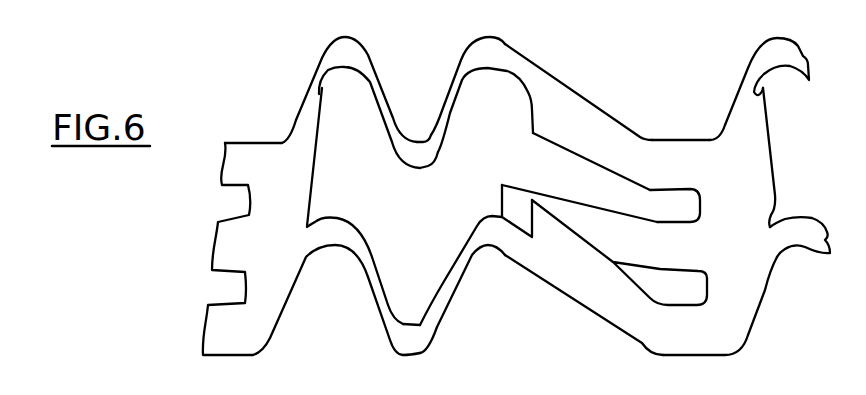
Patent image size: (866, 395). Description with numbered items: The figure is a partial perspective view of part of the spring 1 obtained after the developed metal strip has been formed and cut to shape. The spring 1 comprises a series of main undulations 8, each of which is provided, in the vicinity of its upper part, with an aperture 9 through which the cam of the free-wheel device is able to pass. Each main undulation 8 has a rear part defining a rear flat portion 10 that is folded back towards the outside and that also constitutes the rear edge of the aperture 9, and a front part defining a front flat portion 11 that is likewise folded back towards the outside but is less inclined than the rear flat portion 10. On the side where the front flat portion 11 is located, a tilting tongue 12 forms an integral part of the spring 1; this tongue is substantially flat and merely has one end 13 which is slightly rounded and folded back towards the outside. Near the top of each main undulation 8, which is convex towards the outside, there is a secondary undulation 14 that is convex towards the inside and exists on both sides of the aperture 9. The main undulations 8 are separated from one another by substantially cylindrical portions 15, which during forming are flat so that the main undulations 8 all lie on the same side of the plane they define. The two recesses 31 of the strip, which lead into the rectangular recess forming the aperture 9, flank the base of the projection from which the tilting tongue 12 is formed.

The spring 1 is at (553, 295).
The main undulation 8 is at (550, 72).
The aperture 9 is at (397, 252).
The rear flat portion 10 is at (295, 167).
The front flat portion 11 is at (578, 118).
The tilting tongue 12 is at (585, 222).
The end of tilting tongue 13 is at (512, 203).
The secondary undulation 14 is at (417, 157).
The substantially cylindrical portion 15 is at (240, 157).
The recess 31 is at (242, 199).